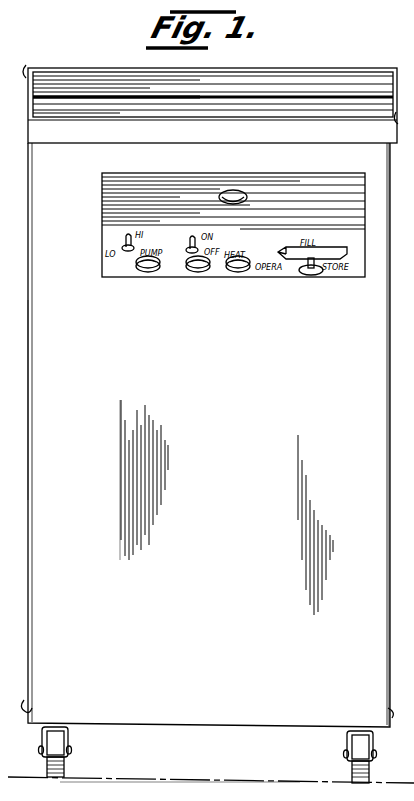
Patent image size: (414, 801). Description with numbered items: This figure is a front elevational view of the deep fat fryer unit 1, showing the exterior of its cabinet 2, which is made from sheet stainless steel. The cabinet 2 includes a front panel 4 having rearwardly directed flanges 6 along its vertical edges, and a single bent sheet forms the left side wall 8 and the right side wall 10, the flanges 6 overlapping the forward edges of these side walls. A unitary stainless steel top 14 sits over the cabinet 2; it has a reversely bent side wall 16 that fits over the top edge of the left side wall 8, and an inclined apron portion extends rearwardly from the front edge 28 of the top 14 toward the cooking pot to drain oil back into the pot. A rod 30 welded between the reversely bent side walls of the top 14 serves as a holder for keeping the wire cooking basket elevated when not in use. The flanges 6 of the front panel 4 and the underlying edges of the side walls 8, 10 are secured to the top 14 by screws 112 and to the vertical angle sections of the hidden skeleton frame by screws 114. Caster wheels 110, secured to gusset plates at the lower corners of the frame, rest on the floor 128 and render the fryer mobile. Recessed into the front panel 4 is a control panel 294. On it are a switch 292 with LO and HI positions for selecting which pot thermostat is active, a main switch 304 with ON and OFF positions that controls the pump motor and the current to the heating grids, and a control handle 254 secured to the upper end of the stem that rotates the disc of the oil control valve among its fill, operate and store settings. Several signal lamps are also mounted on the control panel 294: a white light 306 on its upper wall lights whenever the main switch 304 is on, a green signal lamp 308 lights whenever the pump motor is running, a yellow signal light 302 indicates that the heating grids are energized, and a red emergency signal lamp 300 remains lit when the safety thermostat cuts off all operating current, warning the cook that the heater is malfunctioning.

The deep fat fryer unit 1 is at (309, 63).
The cabinet 2 is at (256, 708).
The front panel 4 is at (214, 616).
The flanges 6 is at (407, 641).
The left side wall 8 is at (28, 396).
The right side wall 10 is at (392, 355).
The top 14 is at (354, 79).
The reversely bent side wall 16 is at (27, 64).
The front edge 28 is at (78, 112).
The rod 30 is at (88, 95).
The caster wheels 110 is at (64, 770).
The screws 112 is at (30, 122).
The screws 114 is at (28, 706).
The floor 128 is at (108, 800).
The control handle 254 is at (340, 246).
The switch 292 is at (122, 238).
The control panel 294 is at (300, 192).
The red emergency signal lamp 300 is at (199, 273).
The yellow signal light 302 is at (238, 273).
The main switch 304 is at (192, 240).
The white light 306 is at (232, 190).
The green signal lamp 308 is at (150, 273).